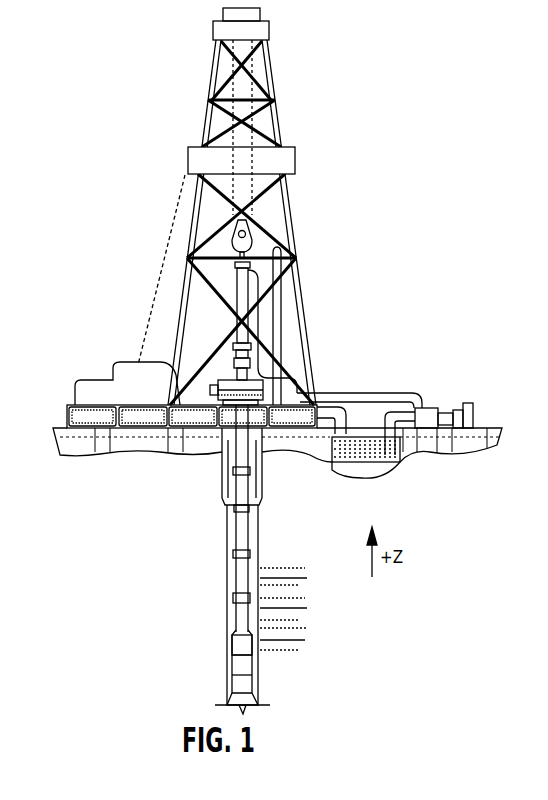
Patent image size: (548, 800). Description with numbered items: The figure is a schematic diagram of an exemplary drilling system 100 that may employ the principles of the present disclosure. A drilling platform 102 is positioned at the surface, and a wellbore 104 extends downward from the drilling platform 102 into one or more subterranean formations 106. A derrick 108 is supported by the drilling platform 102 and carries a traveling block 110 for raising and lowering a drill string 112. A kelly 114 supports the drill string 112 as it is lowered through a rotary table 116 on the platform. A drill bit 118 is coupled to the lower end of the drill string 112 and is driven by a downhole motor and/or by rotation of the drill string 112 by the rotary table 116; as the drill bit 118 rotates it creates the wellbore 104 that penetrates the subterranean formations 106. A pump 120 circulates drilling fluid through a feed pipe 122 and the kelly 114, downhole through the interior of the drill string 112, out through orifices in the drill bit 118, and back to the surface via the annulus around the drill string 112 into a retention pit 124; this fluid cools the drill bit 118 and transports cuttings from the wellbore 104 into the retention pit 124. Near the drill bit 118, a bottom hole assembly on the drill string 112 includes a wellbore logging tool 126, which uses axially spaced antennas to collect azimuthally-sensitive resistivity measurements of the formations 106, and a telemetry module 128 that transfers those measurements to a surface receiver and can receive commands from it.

The drilling system 100 is at (398, 150).
The drilling platform 102 is at (66, 412).
The wellbore 104 is at (259, 538).
The subterranean formations 106 is at (313, 563).
The derrick 108 is at (276, 84).
The traveling block 110 is at (249, 235).
The drill string 112 is at (245, 521).
The kelly 114 is at (246, 293).
The rotary table 116 is at (254, 378).
The drill bit 118 is at (258, 700).
The pump 120 is at (428, 410).
The feed pipe 122 is at (391, 393).
The retention pit 124 is at (359, 463).
The wellbore logging tool 126 is at (236, 665).
The telemetry module 128 is at (236, 647).